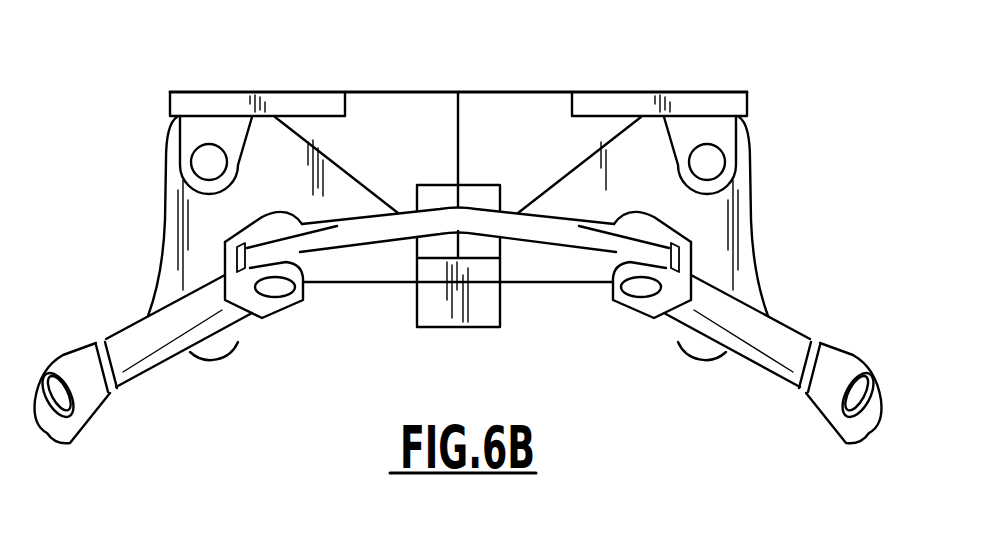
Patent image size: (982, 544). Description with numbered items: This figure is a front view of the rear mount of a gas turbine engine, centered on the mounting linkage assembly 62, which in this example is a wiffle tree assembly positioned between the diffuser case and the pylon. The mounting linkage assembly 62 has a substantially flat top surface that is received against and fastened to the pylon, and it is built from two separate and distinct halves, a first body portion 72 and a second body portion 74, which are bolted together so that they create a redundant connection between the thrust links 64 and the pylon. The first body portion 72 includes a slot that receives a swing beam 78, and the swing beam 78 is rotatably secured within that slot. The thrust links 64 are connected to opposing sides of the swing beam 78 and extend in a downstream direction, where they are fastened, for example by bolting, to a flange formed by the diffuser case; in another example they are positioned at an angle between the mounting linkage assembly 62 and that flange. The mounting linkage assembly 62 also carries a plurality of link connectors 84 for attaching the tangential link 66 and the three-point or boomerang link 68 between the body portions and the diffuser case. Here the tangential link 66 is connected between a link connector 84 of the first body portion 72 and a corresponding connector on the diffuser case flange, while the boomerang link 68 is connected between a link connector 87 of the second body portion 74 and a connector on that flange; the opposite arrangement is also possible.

The mounting linkage assembly 62 is at (158, 78).
The thrust links 64 is at (163, 332).
The tangential link 66 is at (737, 245).
The three-point link 68 is at (200, 226).
The first body portion 72 is at (596, 107).
The second body portion 74 is at (414, 108).
The swing beam 78 is at (555, 267).
The link connectors 84 is at (723, 125).
The link connector 87 is at (194, 127).